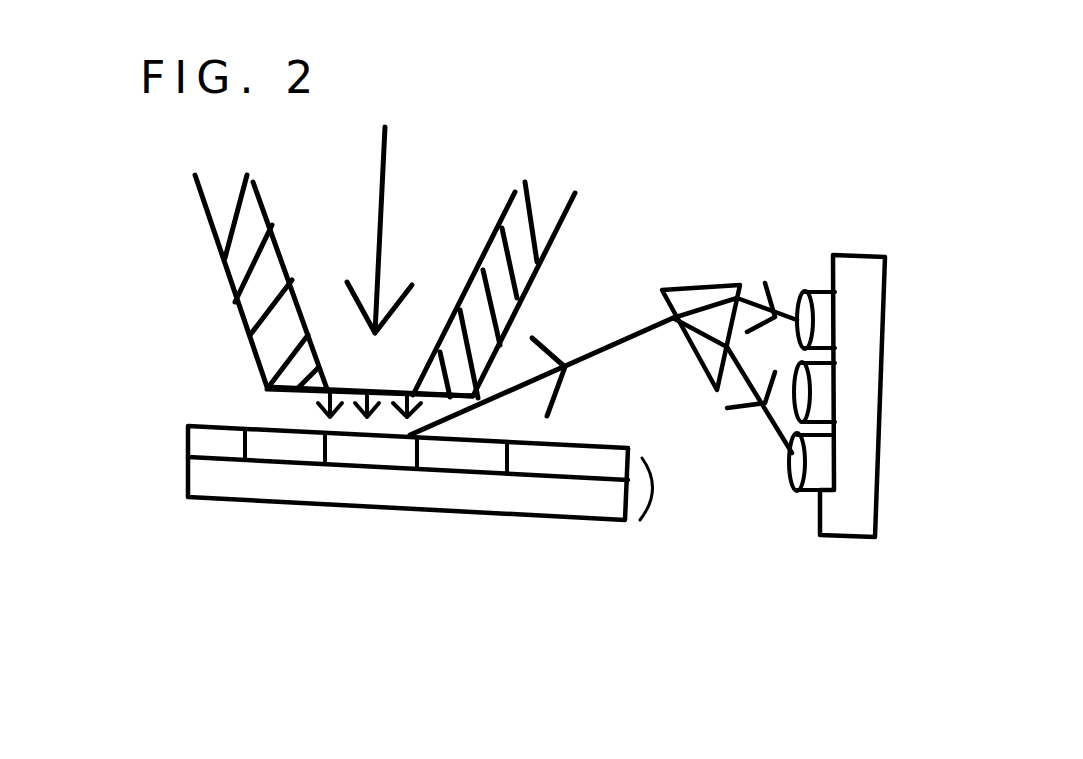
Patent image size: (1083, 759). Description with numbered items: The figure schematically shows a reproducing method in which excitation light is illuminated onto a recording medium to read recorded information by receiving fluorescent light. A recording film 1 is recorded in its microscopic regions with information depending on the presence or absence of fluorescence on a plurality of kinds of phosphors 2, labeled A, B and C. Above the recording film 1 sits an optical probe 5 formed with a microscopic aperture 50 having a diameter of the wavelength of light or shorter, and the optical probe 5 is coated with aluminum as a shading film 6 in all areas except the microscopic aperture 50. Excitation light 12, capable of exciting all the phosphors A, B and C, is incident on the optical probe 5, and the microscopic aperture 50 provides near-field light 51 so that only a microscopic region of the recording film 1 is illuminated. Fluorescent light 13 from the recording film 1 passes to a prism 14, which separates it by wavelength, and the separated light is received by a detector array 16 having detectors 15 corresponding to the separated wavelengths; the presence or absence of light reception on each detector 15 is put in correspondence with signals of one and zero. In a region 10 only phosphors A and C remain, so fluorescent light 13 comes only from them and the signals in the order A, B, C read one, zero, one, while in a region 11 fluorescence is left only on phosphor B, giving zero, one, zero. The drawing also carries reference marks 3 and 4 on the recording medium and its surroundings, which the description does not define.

The recording film 1 is at (207, 442).
The phosphors 2 is at (303, 462).
The substrate 3 is at (563, 498).
The photodetector unit 4 is at (667, 489).
The optical probe 5 is at (285, 222).
The shading film 6 is at (252, 300).
The region 10 is at (358, 457).
The region 11 is at (475, 472).
The excitation light 12 is at (387, 188).
The fluorescent light 13 is at (582, 352).
The prism 14 is at (703, 287).
The detectors 15 is at (842, 317).
The detector array 16 is at (868, 262).
The microscopic aperture 50 is at (327, 386).
The near-field light 51 is at (327, 415).